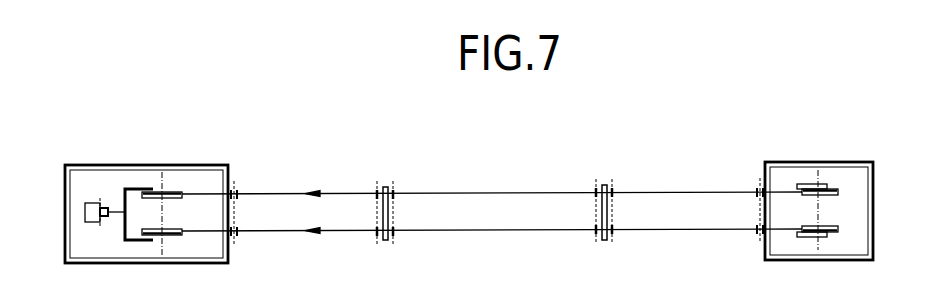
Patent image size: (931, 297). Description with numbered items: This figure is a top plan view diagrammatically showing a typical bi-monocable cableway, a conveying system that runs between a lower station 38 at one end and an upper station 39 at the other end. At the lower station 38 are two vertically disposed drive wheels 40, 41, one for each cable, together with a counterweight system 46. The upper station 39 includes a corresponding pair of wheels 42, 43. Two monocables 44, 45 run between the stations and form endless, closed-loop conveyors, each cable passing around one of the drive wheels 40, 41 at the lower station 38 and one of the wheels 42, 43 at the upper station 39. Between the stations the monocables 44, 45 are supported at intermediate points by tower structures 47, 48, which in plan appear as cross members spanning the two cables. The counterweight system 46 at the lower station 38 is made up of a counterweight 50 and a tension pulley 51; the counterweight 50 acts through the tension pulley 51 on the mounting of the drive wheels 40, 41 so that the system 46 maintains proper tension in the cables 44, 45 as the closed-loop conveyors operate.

The lower station 38 is at (86, 161).
The upper station 39 is at (843, 154).
The drive wheel 40 is at (178, 192).
The drive wheel 41 is at (170, 236).
The wheel 42 is at (832, 196).
The wheel 43 is at (832, 233).
The monocable 44 is at (499, 193).
The monocable 45 is at (500, 231).
The counterweight system 46 is at (142, 182).
The tower structure 47 is at (388, 186).
The tower structure 48 is at (606, 185).
The counterweight 50 is at (85, 211).
The tension pulley 51 is at (104, 218).